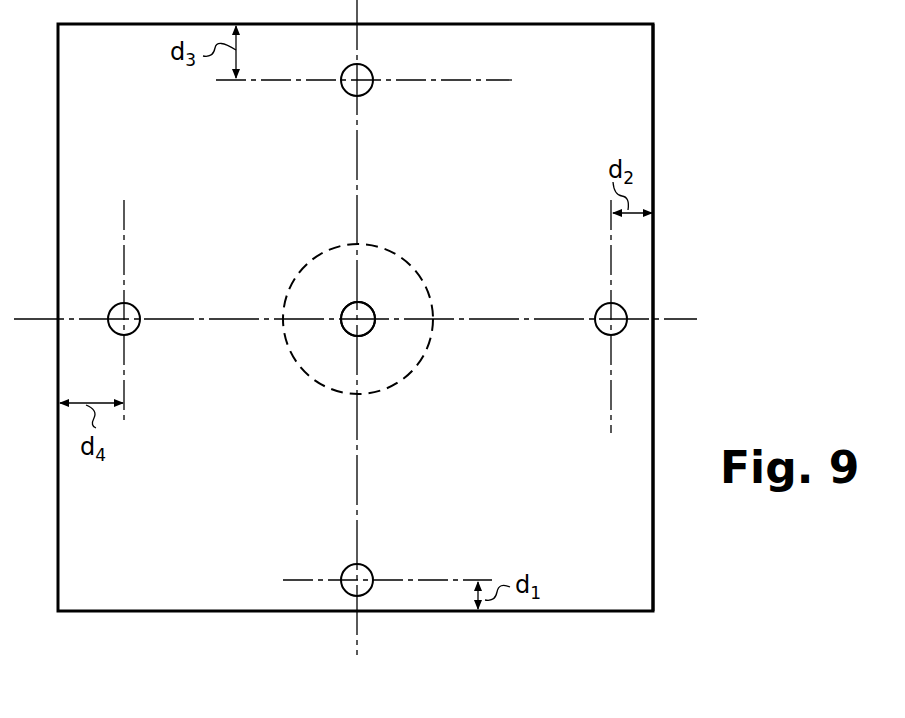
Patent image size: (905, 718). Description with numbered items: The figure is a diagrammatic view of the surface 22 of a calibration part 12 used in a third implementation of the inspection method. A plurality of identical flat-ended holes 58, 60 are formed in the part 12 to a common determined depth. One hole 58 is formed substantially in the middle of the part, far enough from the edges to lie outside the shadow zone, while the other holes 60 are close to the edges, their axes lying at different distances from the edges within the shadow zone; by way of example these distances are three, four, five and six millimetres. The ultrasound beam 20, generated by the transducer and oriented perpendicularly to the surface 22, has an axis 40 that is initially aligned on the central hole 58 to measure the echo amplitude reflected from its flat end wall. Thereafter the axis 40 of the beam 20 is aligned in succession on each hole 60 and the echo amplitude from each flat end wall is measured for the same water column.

The calibration part 12 is at (654, 62).
The surface of the part 22 is at (637, 114).
The flat-ended holes 60 is at (371, 88).
The axis of the beam 40 is at (357, 320).
The flat-ended hole 58 is at (345, 310).
The ultrasound beam 20 is at (310, 358).